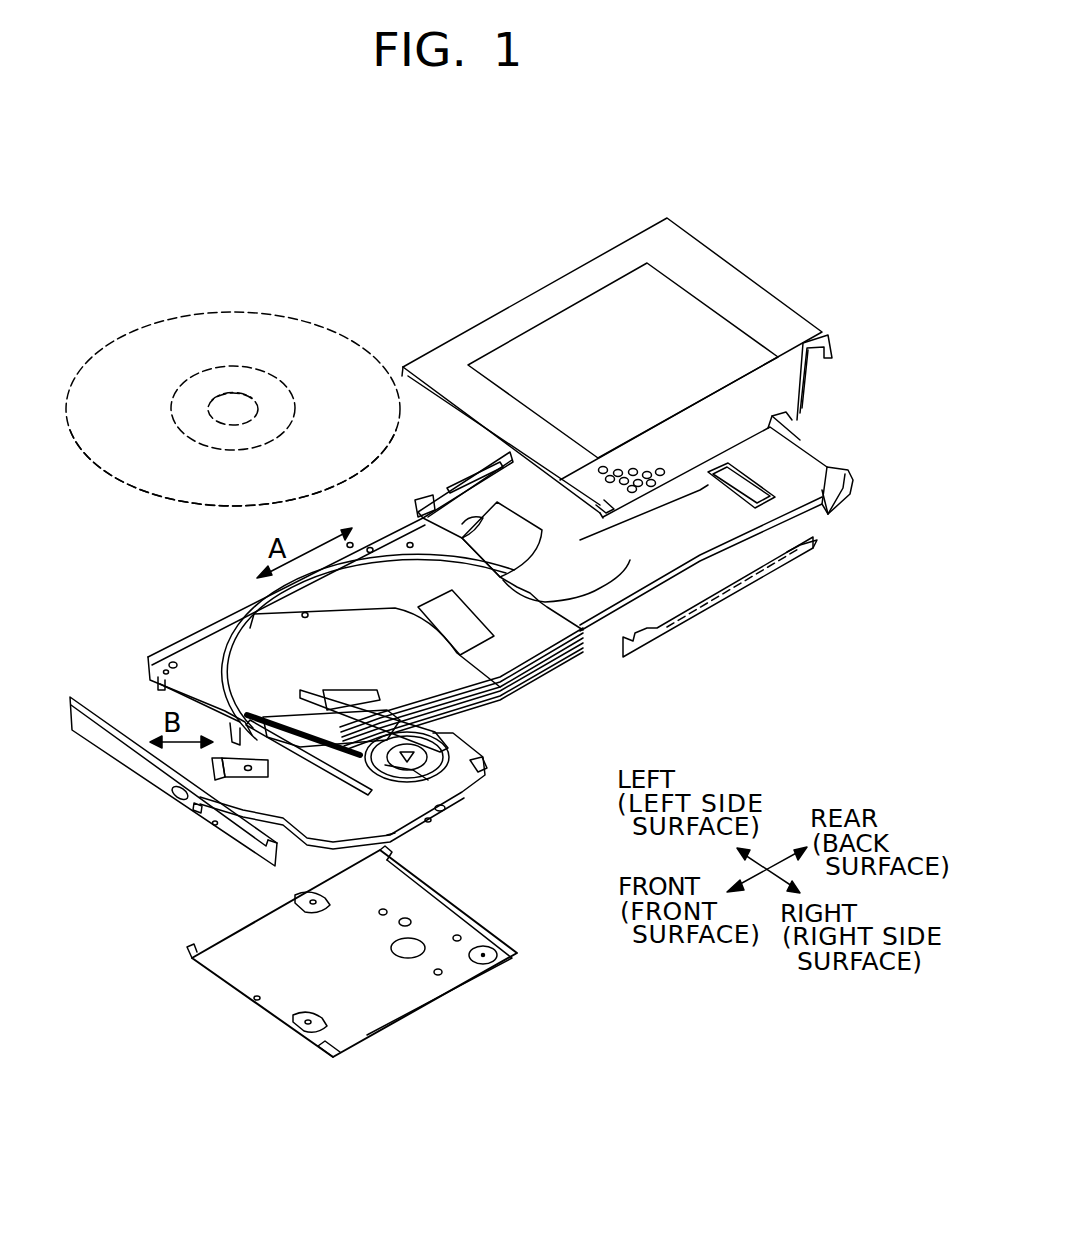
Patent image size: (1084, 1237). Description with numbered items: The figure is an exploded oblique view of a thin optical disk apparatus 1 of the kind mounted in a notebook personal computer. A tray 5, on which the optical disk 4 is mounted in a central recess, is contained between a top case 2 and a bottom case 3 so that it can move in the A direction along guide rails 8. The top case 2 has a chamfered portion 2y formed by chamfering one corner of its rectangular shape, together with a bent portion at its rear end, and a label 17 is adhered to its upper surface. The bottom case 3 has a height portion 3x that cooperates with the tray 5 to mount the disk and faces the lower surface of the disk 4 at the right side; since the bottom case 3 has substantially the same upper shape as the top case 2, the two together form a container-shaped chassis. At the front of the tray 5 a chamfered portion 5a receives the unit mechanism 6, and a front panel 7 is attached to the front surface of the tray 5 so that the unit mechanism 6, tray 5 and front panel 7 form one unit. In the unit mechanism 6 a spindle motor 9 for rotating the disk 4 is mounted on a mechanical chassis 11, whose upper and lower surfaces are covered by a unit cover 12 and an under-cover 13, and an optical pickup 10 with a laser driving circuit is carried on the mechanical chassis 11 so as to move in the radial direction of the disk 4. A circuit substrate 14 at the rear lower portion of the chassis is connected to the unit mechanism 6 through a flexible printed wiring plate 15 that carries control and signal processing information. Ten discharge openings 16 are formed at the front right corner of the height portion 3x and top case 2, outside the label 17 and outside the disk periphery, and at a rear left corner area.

The optical disk apparatus 1 is at (388, 300).
The top case 2 is at (503, 326).
The chamfered portion 2y is at (815, 368).
The bottom case 3 is at (737, 565).
The height portion 3x is at (723, 577).
The optical disk 4 is at (147, 333).
The tray 5 is at (417, 533).
The chamfered portion 5a is at (258, 650).
The unit mechanism 6 is at (477, 732).
The front panel 7 is at (132, 760).
The guide rails 8 is at (537, 677).
The spindle motor 9 is at (457, 792).
The optical pickup 10 is at (230, 770).
The mechanical chassis 11 is at (397, 830).
The unit cover 12 is at (413, 770).
The under-cover 13 is at (410, 993).
The circuit substrate 14 is at (795, 465).
The flexible printed wiring plate 15 is at (627, 563).
The discharge openings 16 is at (820, 520).
The label 17 is at (508, 361).